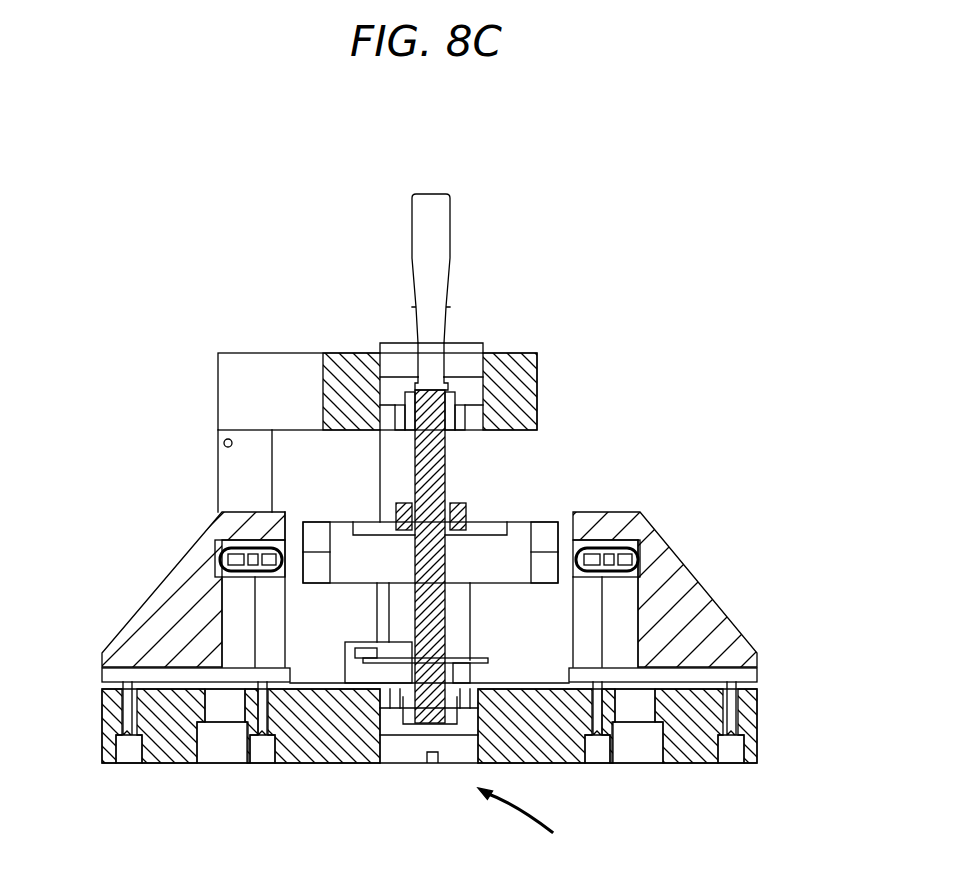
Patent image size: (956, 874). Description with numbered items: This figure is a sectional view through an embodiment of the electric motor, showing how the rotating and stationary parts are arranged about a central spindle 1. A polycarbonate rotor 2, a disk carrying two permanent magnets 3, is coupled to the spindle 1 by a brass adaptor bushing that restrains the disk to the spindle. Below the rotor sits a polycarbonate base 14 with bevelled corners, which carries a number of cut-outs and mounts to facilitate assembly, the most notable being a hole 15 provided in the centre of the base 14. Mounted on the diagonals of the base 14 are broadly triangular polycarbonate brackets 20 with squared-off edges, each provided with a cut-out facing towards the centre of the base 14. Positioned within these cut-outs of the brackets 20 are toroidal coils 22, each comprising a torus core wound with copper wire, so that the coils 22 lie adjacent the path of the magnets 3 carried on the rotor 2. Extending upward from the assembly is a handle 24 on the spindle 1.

The spindle 1 is at (447, 480).
The rotor 2 is at (500, 583).
The permanent magnet 3 is at (540, 530).
The base 14 is at (678, 763).
The hole 15 is at (536, 820).
The bracket 20 is at (740, 625).
The toroidal coil 22 is at (212, 548).
The handle 24 is at (450, 285).